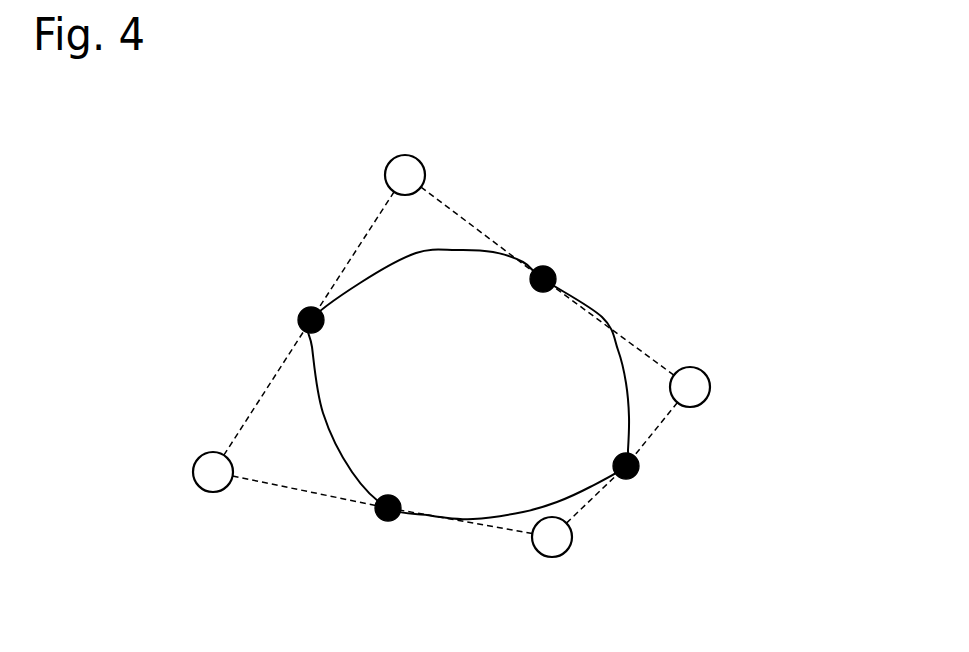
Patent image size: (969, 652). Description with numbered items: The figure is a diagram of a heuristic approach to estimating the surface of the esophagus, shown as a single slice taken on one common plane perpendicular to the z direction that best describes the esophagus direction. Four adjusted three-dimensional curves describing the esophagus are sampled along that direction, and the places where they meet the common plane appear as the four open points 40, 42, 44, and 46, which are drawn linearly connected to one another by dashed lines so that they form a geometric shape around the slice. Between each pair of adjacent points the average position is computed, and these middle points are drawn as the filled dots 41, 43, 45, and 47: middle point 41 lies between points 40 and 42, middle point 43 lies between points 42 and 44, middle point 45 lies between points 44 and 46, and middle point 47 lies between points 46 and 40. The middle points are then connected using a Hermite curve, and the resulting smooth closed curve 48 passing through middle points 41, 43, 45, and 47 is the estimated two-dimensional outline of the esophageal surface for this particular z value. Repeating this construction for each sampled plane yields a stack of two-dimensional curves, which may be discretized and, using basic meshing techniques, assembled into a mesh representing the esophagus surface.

The point 40 is at (572, 547).
The middle point 41 is at (639, 467).
The point 42 is at (711, 393).
The middle point 43 is at (556, 275).
The point 44 is at (384, 177).
The middle point 45 is at (298, 319).
The point 46 is at (192, 472).
The middle point 47 is at (398, 521).
The closed spline curve 48 is at (612, 417).